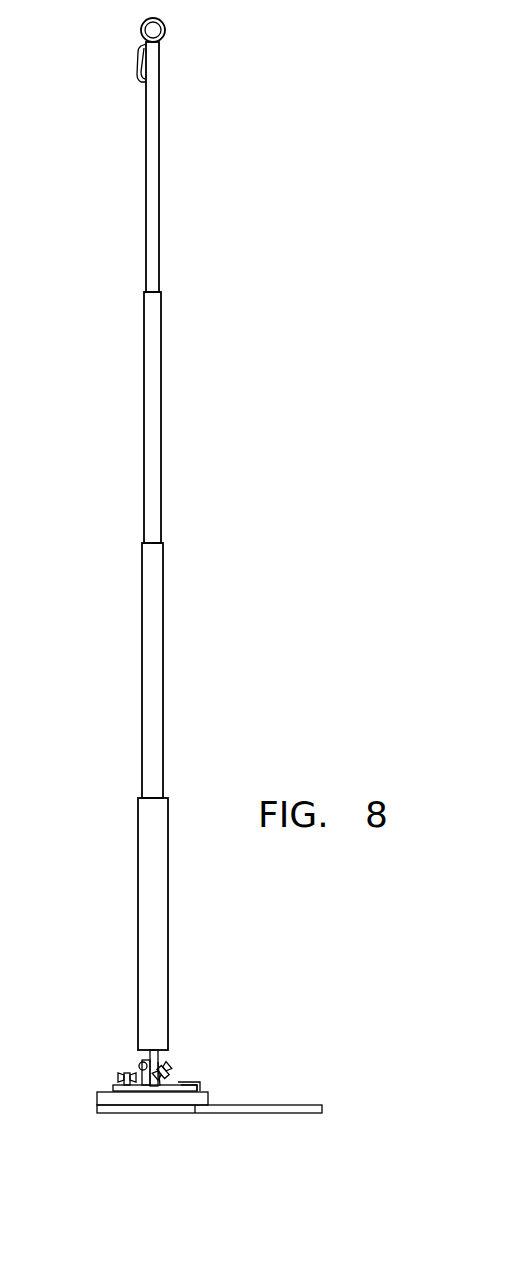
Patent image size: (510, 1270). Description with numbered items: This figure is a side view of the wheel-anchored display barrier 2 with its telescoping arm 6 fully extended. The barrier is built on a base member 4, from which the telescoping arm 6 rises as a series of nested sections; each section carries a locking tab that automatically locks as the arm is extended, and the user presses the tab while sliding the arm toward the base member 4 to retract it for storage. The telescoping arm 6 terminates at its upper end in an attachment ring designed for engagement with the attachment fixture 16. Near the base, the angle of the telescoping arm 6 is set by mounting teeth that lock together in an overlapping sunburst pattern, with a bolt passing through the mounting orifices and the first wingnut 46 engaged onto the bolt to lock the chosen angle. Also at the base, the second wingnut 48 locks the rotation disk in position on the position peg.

The wheel-anchored display barrier 2 is at (247, 360).
The base member 4 is at (240, 1113).
The telescoping arm 6 is at (163, 613).
The attachment fixture 16 is at (138, 67).
The first wingnut 46 is at (167, 1072).
The second wingnut 48 is at (120, 1075).